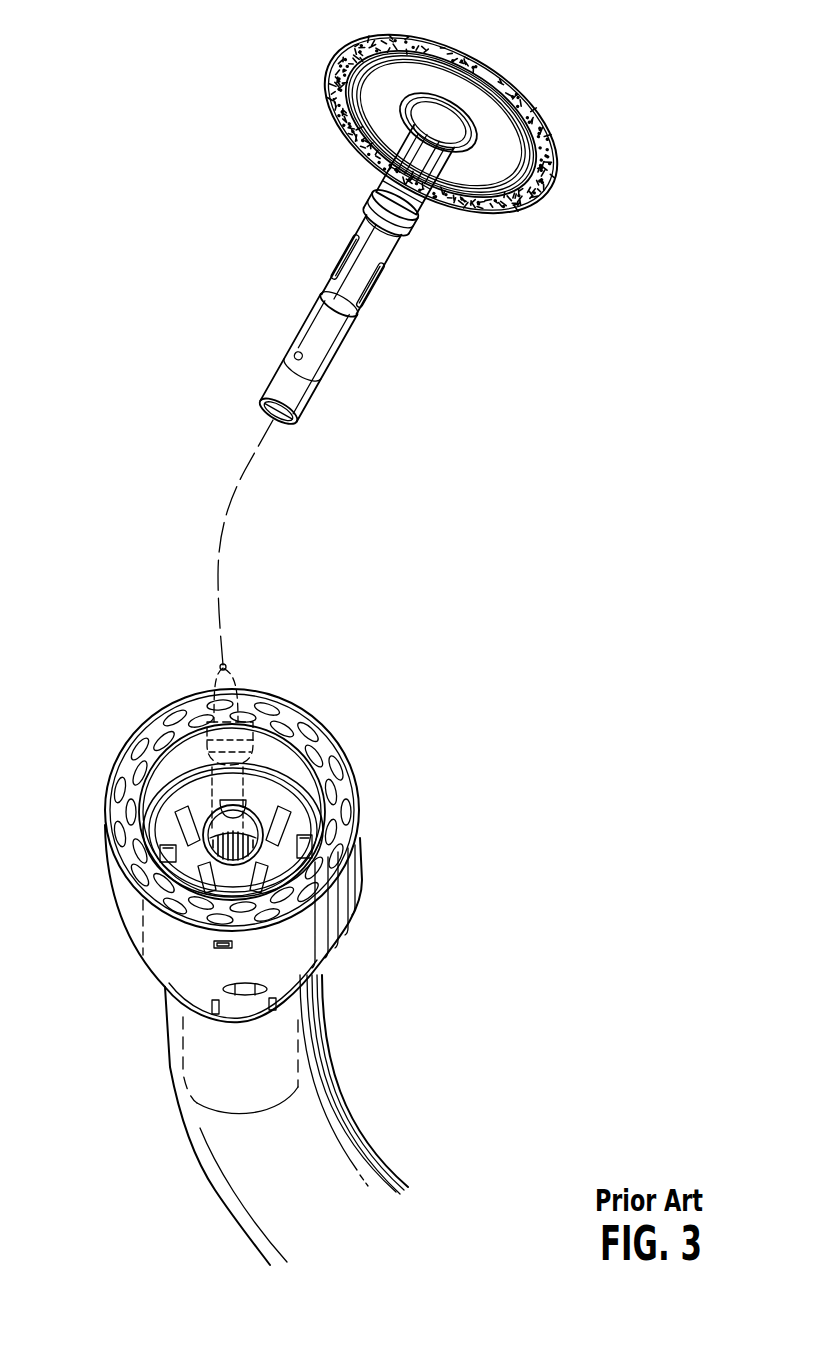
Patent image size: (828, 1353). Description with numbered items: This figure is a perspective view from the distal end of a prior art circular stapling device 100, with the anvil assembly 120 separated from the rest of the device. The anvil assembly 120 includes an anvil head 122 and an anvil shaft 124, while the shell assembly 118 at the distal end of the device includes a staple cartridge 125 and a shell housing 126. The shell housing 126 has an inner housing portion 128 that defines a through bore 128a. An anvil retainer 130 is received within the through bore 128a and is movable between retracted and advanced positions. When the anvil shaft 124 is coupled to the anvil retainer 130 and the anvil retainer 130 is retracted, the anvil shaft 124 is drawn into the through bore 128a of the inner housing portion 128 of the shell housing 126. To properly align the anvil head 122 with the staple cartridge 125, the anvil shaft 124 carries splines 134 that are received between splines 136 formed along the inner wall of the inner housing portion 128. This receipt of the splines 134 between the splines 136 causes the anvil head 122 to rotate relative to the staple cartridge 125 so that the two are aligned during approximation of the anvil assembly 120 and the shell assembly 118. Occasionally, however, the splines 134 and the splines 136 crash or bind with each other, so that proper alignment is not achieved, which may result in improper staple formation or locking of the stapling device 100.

The circular stapling device 100 is at (378, 1126).
The shell assembly 118 is at (92, 892).
The anvil assembly 120 is at (382, 240).
The anvil head 122 is at (441, 125).
The anvil shaft 124 is at (322, 305).
The staple cartridge 125 is at (307, 720).
The shell housing 126 is at (362, 881).
The inner housing portion 128 is at (262, 847).
The through bore 128a is at (233, 822).
The anvil retainer 130 is at (232, 668).
The splines 134 is at (360, 280).
The splines 136 is at (236, 826).